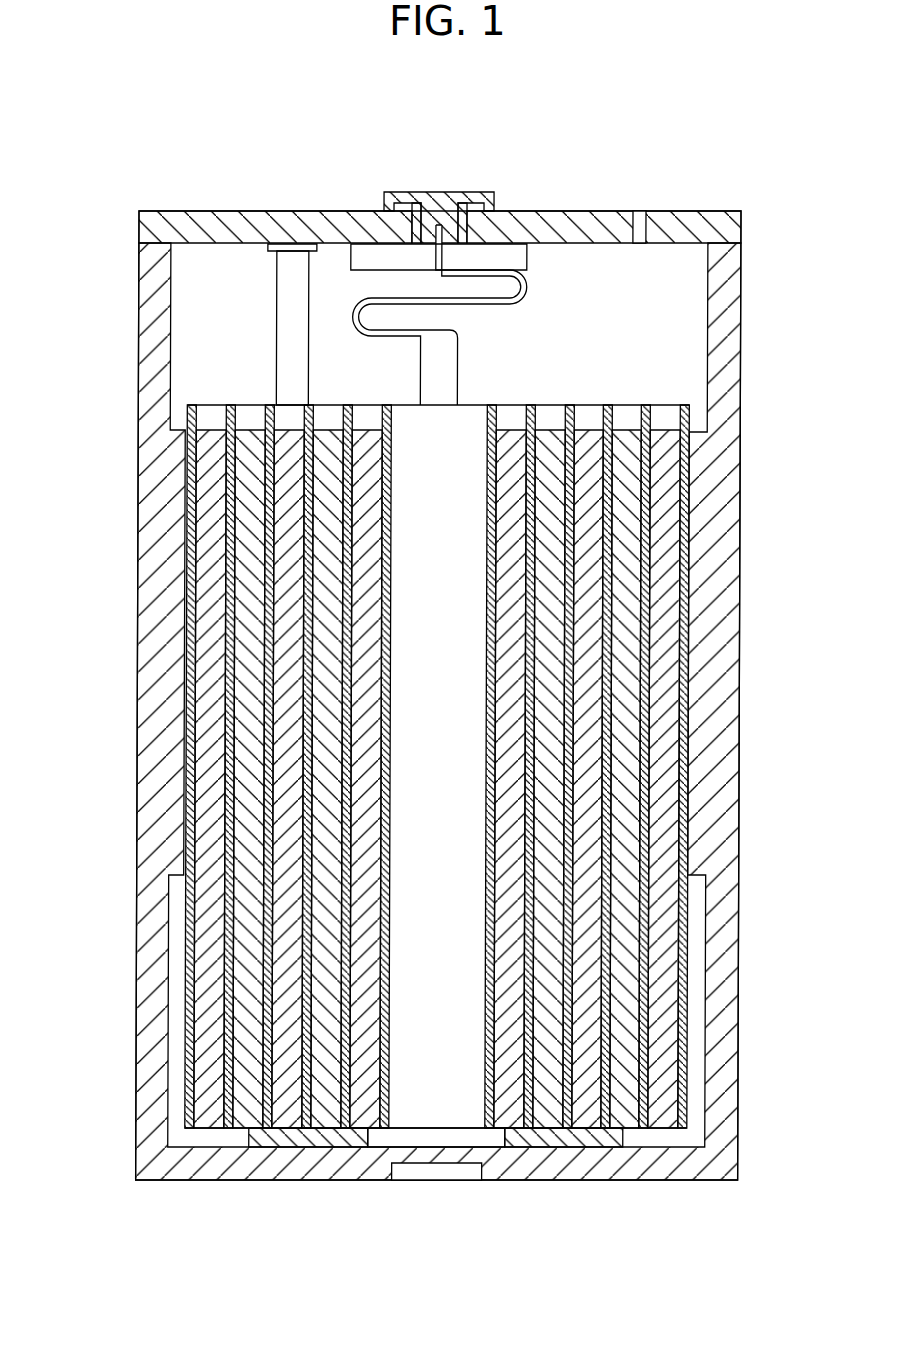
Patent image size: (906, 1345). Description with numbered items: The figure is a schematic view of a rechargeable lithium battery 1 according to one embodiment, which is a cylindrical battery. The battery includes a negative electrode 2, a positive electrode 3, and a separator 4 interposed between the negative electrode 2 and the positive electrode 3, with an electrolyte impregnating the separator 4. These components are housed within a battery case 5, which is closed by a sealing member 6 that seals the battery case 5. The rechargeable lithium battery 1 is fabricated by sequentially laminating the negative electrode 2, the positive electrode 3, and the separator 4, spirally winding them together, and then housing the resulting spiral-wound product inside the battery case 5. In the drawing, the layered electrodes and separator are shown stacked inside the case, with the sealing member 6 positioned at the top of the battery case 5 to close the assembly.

The rechargeable lithium battery 1 is at (516, 132).
The negative electrode 2 is at (669, 980).
The positive electrode 3 is at (249, 932).
The separator 4 is at (229, 1033).
The battery case 5 is at (158, 318).
The sealing member 6 is at (385, 195).